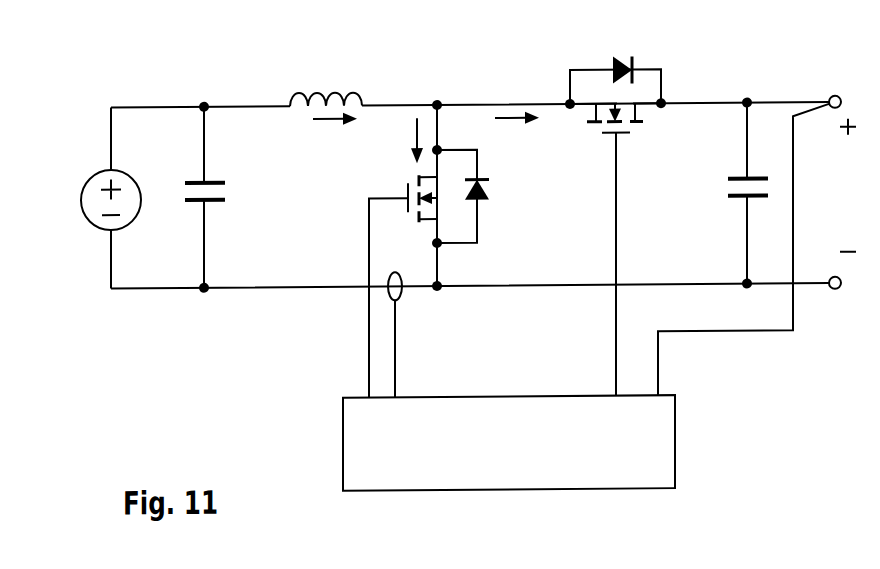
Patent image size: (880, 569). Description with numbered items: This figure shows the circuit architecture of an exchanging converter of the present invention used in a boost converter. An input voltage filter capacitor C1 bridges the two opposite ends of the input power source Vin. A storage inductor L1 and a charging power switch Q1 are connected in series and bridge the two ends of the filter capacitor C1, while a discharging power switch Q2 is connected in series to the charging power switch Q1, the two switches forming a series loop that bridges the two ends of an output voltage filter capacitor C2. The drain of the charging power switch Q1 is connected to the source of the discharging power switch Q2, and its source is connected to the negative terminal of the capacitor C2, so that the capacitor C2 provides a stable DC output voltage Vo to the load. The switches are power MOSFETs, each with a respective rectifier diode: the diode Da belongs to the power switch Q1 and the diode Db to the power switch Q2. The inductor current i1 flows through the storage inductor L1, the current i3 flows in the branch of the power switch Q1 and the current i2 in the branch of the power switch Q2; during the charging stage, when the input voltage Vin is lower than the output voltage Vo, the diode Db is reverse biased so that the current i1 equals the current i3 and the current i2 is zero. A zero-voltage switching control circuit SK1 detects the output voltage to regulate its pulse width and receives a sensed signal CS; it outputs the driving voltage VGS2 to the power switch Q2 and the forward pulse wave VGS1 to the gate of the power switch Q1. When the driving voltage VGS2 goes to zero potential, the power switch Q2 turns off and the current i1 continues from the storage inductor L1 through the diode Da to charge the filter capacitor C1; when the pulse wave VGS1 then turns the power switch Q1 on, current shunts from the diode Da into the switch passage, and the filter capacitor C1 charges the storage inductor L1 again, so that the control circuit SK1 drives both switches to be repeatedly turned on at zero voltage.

The input power source Vin is at (85, 200).
The input voltage filter capacitor C1 is at (234, 197).
The storage inductor L1 is at (326, 78).
The inductor current i1 is at (335, 139).
The discharging switch current i2 is at (517, 138).
The charging switch current i3 is at (400, 141).
The charging power switch Q1 is at (382, 286).
The diode of charging power switch Da is at (489, 196).
The discharging power switch Q2 is at (615, 249).
The diode of discharging power switch Db is at (615, 58).
The output voltage filter capacitor C2 is at (725, 193).
The output voltage Vo is at (854, 185).
The current sense signal CS is at (417, 334).
The driving pulse wave for charging power switch VGS1 is at (338, 369).
The driving voltage for discharging power switch VGS2 is at (587, 367).
The zero-voltage switching control circuit SK1 is at (509, 469).